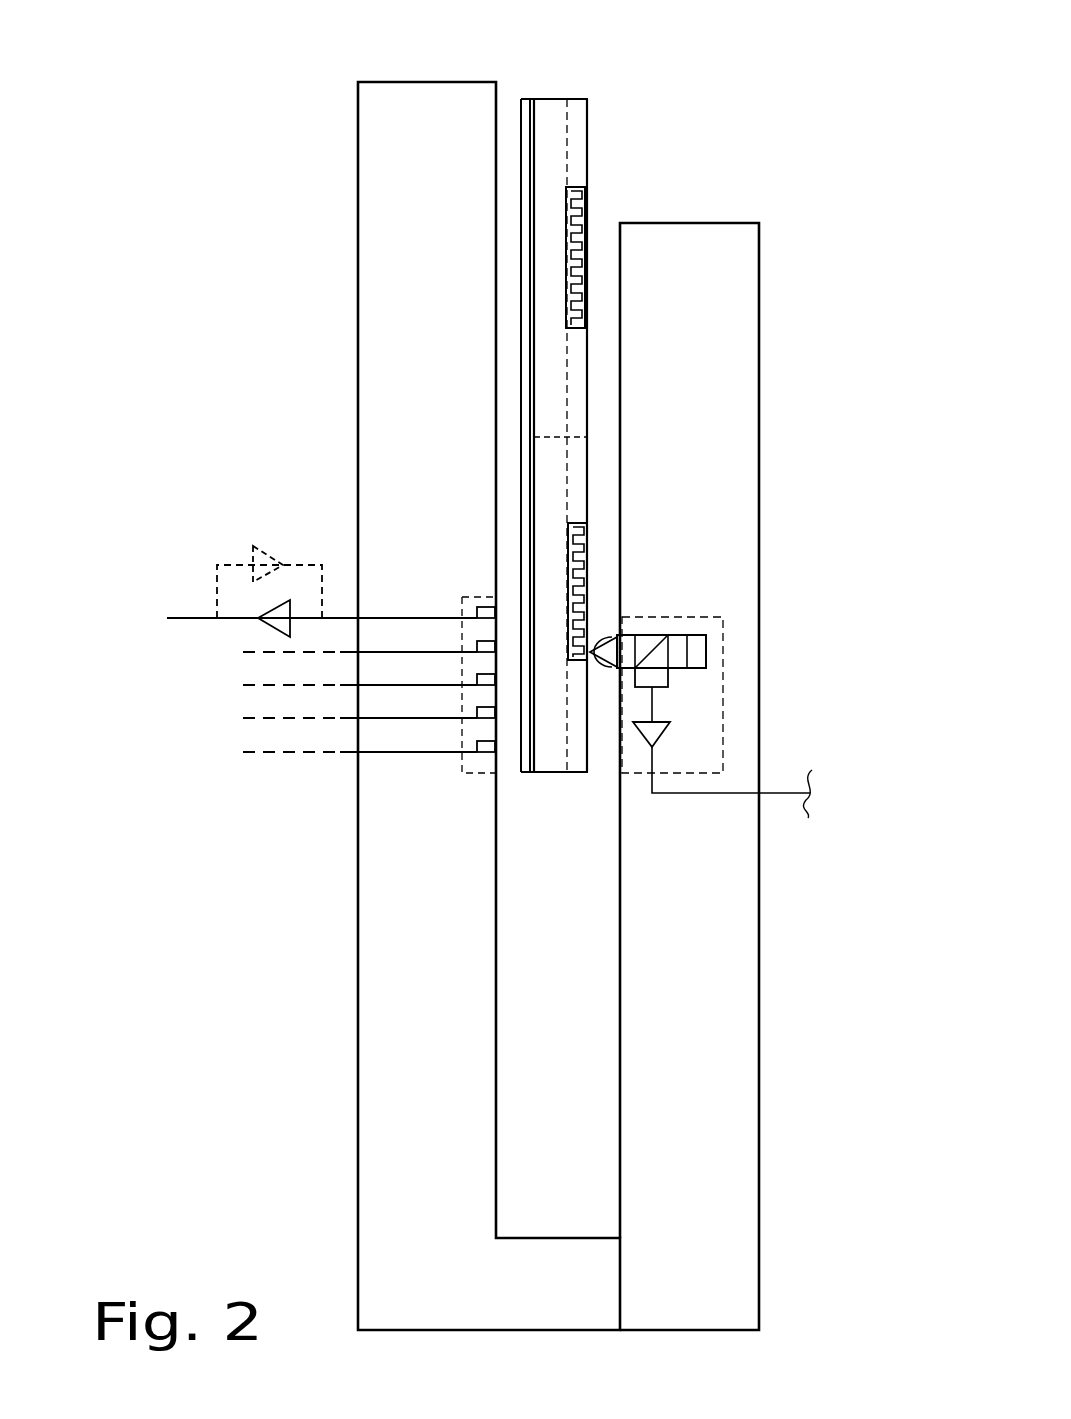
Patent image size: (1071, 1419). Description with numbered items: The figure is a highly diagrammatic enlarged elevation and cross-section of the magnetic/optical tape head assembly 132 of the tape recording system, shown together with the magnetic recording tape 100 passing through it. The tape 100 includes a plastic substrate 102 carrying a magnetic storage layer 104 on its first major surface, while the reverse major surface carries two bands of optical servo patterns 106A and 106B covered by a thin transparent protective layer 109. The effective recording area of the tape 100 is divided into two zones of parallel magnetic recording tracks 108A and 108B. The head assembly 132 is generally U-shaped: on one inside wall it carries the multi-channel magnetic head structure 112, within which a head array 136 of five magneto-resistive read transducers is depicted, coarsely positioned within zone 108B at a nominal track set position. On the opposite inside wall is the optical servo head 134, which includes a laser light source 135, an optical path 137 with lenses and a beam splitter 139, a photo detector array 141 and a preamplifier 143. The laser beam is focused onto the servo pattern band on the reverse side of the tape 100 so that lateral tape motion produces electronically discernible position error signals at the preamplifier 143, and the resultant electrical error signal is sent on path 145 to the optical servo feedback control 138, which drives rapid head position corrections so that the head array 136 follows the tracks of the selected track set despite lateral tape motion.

The magnetic recording tape 100 is at (558, 812).
The plastic substrate 102 is at (550, 108).
The magnetic storage layer 104 is at (526, 108).
The optical servo pattern band 106A is at (578, 213).
The optical servo pattern band 106B is at (583, 550).
The zone of magnetic recording tracks 108A is at (525, 257).
The zone of magnetic recording tracks 108B is at (528, 522).
The transparent protective layer 109 is at (588, 99).
The multi-channel magnetic head structure 112 is at (370, 111).
The magnetic/optical tape head assembly 132 is at (252, 1135).
The optical servo head 134 is at (727, 660).
The laser light source 135 is at (695, 634).
The head array 136 is at (460, 600).
The optical path 137 is at (650, 634).
The optical servo feedback control 138 is at (737, 613).
The beam splitter 139 is at (660, 665).
The photo detector array 141 is at (660, 684).
The preamplifier 143 is at (652, 750).
The path 145 is at (790, 797).